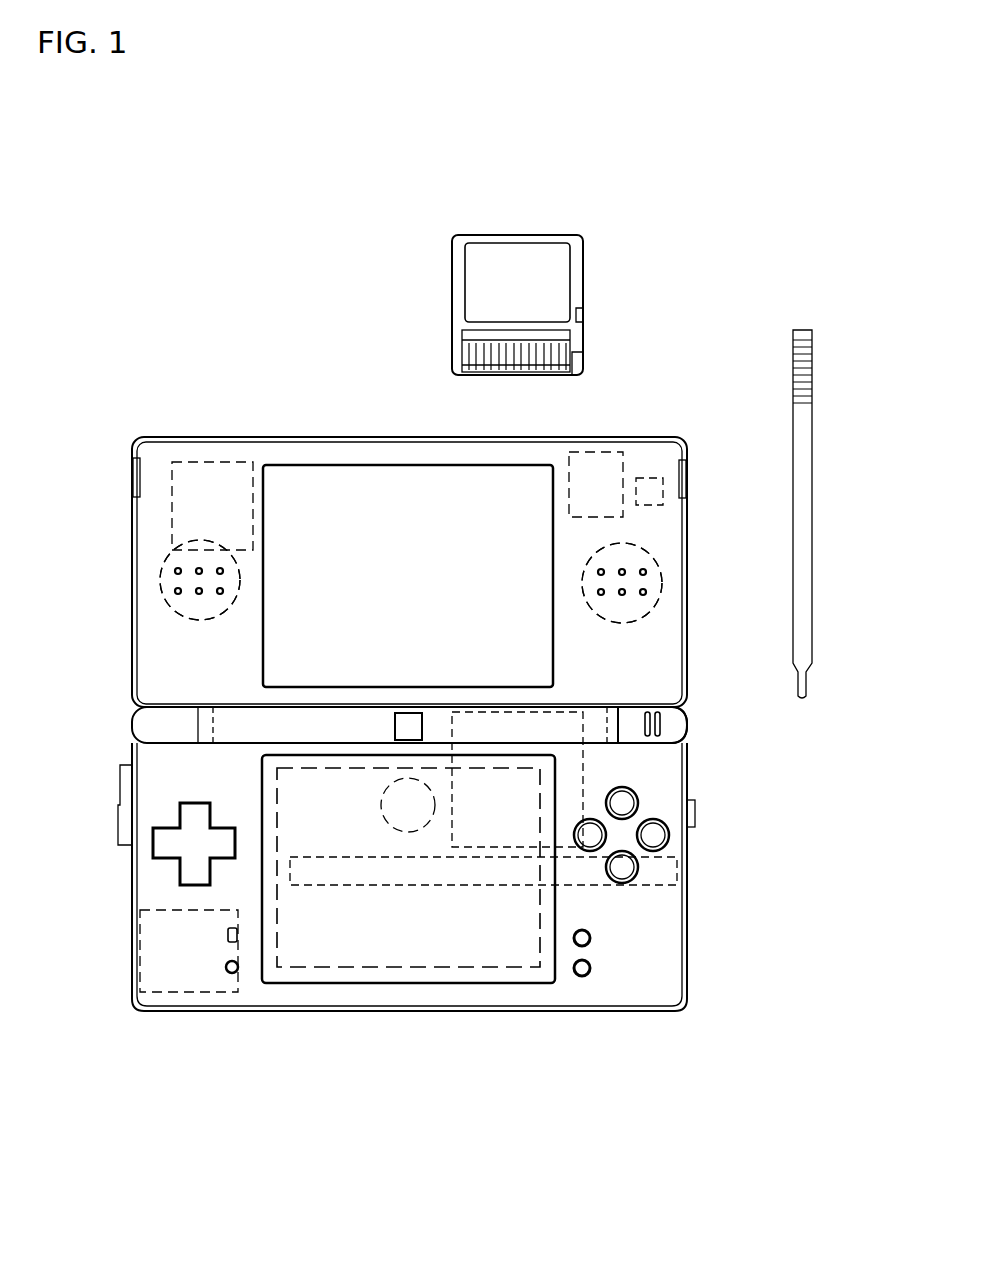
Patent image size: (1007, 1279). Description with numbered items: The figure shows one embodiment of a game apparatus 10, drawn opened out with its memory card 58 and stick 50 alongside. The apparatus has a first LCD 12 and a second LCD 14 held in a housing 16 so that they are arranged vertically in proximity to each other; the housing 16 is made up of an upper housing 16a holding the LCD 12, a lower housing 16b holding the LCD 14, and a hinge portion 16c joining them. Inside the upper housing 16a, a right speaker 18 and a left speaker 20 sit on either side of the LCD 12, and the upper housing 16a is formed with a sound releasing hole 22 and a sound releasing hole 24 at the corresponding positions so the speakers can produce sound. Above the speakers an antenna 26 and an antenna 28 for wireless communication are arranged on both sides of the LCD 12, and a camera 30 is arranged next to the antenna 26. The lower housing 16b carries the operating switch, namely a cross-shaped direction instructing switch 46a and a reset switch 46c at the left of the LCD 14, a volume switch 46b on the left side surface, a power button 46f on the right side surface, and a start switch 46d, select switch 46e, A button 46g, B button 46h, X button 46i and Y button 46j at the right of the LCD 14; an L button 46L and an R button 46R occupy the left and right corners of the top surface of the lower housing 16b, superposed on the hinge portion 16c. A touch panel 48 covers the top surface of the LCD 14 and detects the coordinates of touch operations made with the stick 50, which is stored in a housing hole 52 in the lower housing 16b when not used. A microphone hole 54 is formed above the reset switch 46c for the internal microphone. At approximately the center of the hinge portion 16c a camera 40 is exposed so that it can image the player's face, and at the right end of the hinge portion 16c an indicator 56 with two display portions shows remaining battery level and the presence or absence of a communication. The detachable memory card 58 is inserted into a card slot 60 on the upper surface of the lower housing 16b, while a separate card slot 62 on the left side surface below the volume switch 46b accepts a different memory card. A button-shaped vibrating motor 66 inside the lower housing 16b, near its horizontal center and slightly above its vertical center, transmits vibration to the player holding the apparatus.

The game apparatus 10 is at (227, 144).
The first liquid crystal display (LCD) 12 is at (300, 485).
The second LCD 14 is at (347, 935).
The housing 16 is at (526, 425).
The upper housing 16a is at (466, 455).
The lower housing 16b is at (160, 1003).
The hinge portion 16c is at (372, 727).
The right speaker 18 is at (662, 575).
The left speaker 20 is at (160, 572).
The sound releasing hole 22 is at (641, 557).
The sound releasing hole 24 is at (180, 565).
The antenna 26 is at (596, 462).
The antenna 28 is at (226, 470).
The camera 30 is at (652, 478).
The camera 40 is at (408, 727).
The action switch (L button) 46L is at (132, 722).
The action switch (R button) 46R is at (685, 720).
The direction instructing switch (cross switch) 46a is at (193, 870).
The volume switch 46b is at (120, 790).
The reset switch 46c is at (225, 975).
The start switch 46d is at (592, 938).
The select switch 46e is at (592, 970).
The power button 46f is at (696, 812).
The action switch (A button) 46g is at (668, 840).
The action switch (B button) 46h is at (640, 868).
The action switch (X button) 46i is at (638, 797).
The action switch (Y button) 46j is at (590, 852).
The touch panel 48 is at (307, 955).
The stick 50 is at (800, 333).
The housing hole 52 is at (435, 875).
The microphone hole 54 is at (234, 943).
The indicator 56 is at (663, 728).
The memory card 58 is at (515, 268).
The card slot 60 is at (490, 832).
The card slot 62 is at (160, 962).
The vibrating motor 66 is at (418, 778).